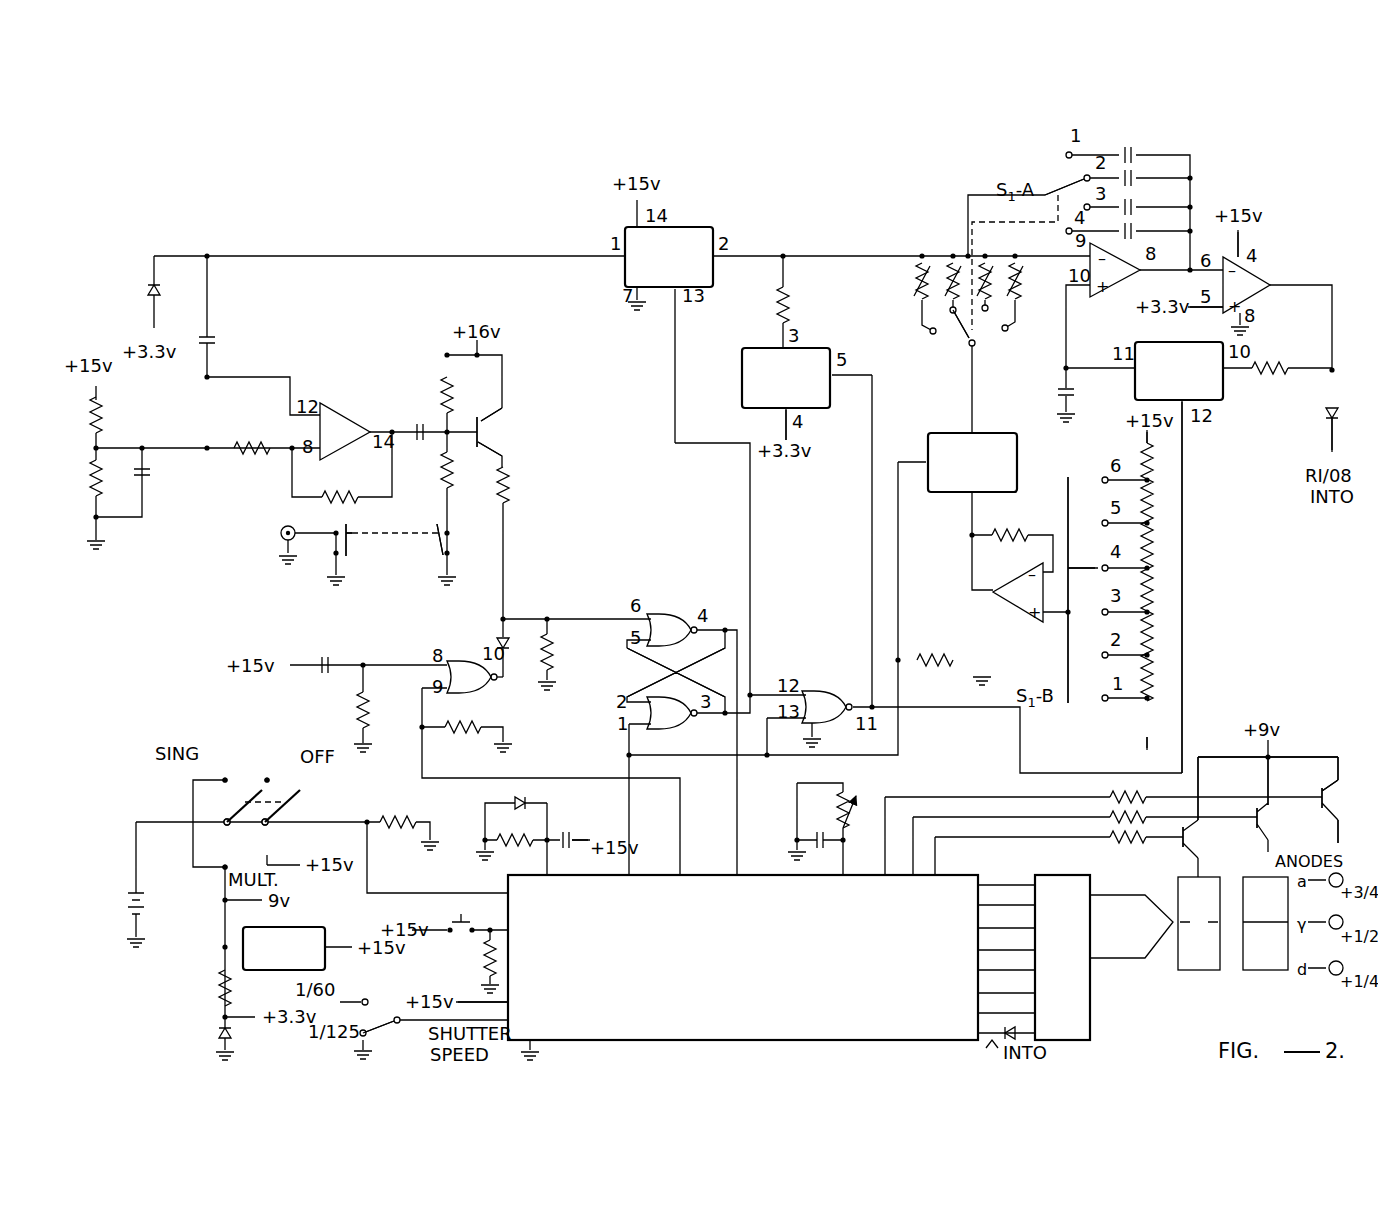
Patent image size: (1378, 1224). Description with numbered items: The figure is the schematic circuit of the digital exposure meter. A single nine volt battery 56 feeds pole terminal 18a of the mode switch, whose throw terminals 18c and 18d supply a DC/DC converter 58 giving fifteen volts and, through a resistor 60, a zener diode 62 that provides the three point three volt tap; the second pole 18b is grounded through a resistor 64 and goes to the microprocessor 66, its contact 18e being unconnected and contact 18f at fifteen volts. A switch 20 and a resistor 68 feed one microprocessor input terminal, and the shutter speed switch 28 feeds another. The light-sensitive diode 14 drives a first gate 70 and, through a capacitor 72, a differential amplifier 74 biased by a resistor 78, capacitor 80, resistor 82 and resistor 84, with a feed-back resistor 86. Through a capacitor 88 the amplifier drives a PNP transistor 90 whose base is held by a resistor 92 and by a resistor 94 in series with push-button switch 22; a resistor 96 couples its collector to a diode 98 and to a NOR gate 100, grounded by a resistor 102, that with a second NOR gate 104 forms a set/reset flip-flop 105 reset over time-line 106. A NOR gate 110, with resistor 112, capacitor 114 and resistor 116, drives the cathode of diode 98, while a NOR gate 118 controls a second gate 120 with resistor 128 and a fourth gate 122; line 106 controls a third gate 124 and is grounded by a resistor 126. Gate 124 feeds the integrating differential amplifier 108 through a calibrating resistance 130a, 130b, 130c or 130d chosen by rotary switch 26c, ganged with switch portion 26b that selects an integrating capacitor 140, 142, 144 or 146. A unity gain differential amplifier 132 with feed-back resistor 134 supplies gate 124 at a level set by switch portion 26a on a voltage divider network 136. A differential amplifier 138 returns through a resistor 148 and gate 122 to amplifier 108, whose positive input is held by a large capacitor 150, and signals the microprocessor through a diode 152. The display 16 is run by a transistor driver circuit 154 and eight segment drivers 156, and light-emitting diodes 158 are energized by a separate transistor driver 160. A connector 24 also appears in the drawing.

The light-sensitive diode 14 is at (148, 292).
The display 16 is at (1164, 972).
The pole terminal 18a is at (246, 806).
The second pole 18b is at (297, 806).
The throw terminal 18c is at (190, 780).
The throw terminal 18d is at (225, 867).
The contact 18e is at (270, 778).
The contact 18f is at (272, 848).
The switch 20 is at (446, 920).
The manual push-button switch 22 is at (432, 536).
The connector 24 is at (280, 534).
The switch portion 26a is at (1068, 478).
The rotary switch portion 26b is at (1060, 172).
The rotary switch 26c is at (964, 342).
The shutter speed switch 28 is at (395, 1034).
The nine volt battery 56 is at (128, 899).
The DC/DC converter 58 is at (300, 927).
The resistor 60 is at (220, 988).
The zener diode 62 is at (218, 1033).
The resistor 64 is at (394, 816).
The microprocessor 66 is at (756, 917).
The resistor 68 is at (484, 956).
The first gate 70 is at (688, 228).
The capacitor 72 is at (216, 343).
The differential amplifier 74 is at (341, 395).
The resistor 78 is at (254, 458).
The capacitor 80 is at (152, 479).
The resistor 82 is at (84, 486).
The resistor 84 is at (84, 423).
The feed-back resistor 86 is at (340, 496).
The capacitor 88 is at (419, 410).
The PNP transistor 90 is at (495, 432).
The resistor 92 is at (439, 398).
The resistor 94 is at (439, 474).
The resistor 96 is at (508, 490).
The diode 98 is at (497, 640).
The NOR gate 100 is at (668, 618).
The resistor 102 is at (552, 655).
The second NOR gate 104 is at (683, 732).
The set/reset flip-flop 105 is at (640, 672).
The time-line 106 is at (686, 758).
The differential amplifier 108 is at (1112, 296).
The NOR gate 110 is at (445, 662).
The resistor 112 is at (458, 724).
The capacitor 114 is at (324, 658).
The resistor 116 is at (357, 714).
The NOR gate 118 is at (822, 692).
The second gate 120 is at (810, 348).
The fourth gate 122 is at (1152, 342).
The third gate 124 is at (978, 433).
The resistor 126 is at (938, 656).
The resistor 128 is at (778, 307).
The variable calibrating resistance 130a is at (916, 288).
The variable calibrating resistance 130b is at (948, 268).
The variable calibrating resistance 130c is at (986, 316).
The variable calibrating resistance 130d is at (1017, 302).
The differential amplifier 132 is at (1018, 604).
The feed-back resistor 134 is at (1012, 534).
The voltage divider network 136 is at (1140, 544).
The differential amplifier 138 is at (1262, 267).
The integrating capacitor 140 is at (1135, 235).
The integrating capacitor 142 is at (1135, 209).
The integrating capacitor 144 is at (1135, 184).
The integrating capacitor 146 is at (1135, 156).
The resistor 148 is at (1262, 378).
The large capacitor 150 is at (1058, 390).
The diode 152 is at (1324, 415).
The transistor driver circuit 154 is at (1221, 790).
The segment drivers 156 is at (1082, 875).
The light-emitting diodes 158 is at (1346, 850).
The transistor driver 160 is at (1330, 792).